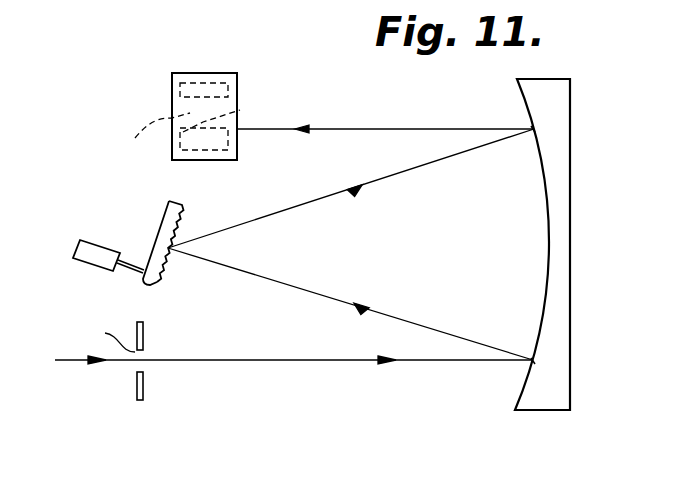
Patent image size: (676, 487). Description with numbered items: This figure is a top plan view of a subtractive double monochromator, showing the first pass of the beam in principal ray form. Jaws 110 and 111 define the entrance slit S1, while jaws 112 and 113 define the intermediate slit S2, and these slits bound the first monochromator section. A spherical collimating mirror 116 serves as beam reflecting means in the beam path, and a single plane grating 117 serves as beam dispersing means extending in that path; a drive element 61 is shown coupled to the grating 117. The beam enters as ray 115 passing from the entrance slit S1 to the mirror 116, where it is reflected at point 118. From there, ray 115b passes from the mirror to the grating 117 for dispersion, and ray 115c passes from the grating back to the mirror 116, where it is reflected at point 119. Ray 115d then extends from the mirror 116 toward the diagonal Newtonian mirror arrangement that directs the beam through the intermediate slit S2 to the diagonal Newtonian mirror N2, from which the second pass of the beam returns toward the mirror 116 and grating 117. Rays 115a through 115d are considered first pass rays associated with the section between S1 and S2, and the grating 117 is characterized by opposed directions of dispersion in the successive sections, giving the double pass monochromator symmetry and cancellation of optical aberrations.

The grating drive actuator 61 is at (96, 263).
The jaw 110 is at (143, 383).
The jaw 111 is at (145, 337).
The jaw 112 is at (208, 150).
The jaw 113 is at (175, 89).
The ray 115 is at (240, 110).
The first pass ray 115a is at (340, 362).
The ray 115b is at (403, 320).
The ray 115c is at (385, 177).
The ray 115d is at (372, 128).
The spherical collimating mirror 116 is at (549, 290).
The single plane grating 117 is at (158, 274).
The reflection point 118 is at (533, 363).
The reflection point 119 is at (533, 130).
The entrance slit S1 is at (109, 339).
The intermediate slit S2 is at (150, 131).
The diagonal Newtonian mirror N2 is at (211, 108).